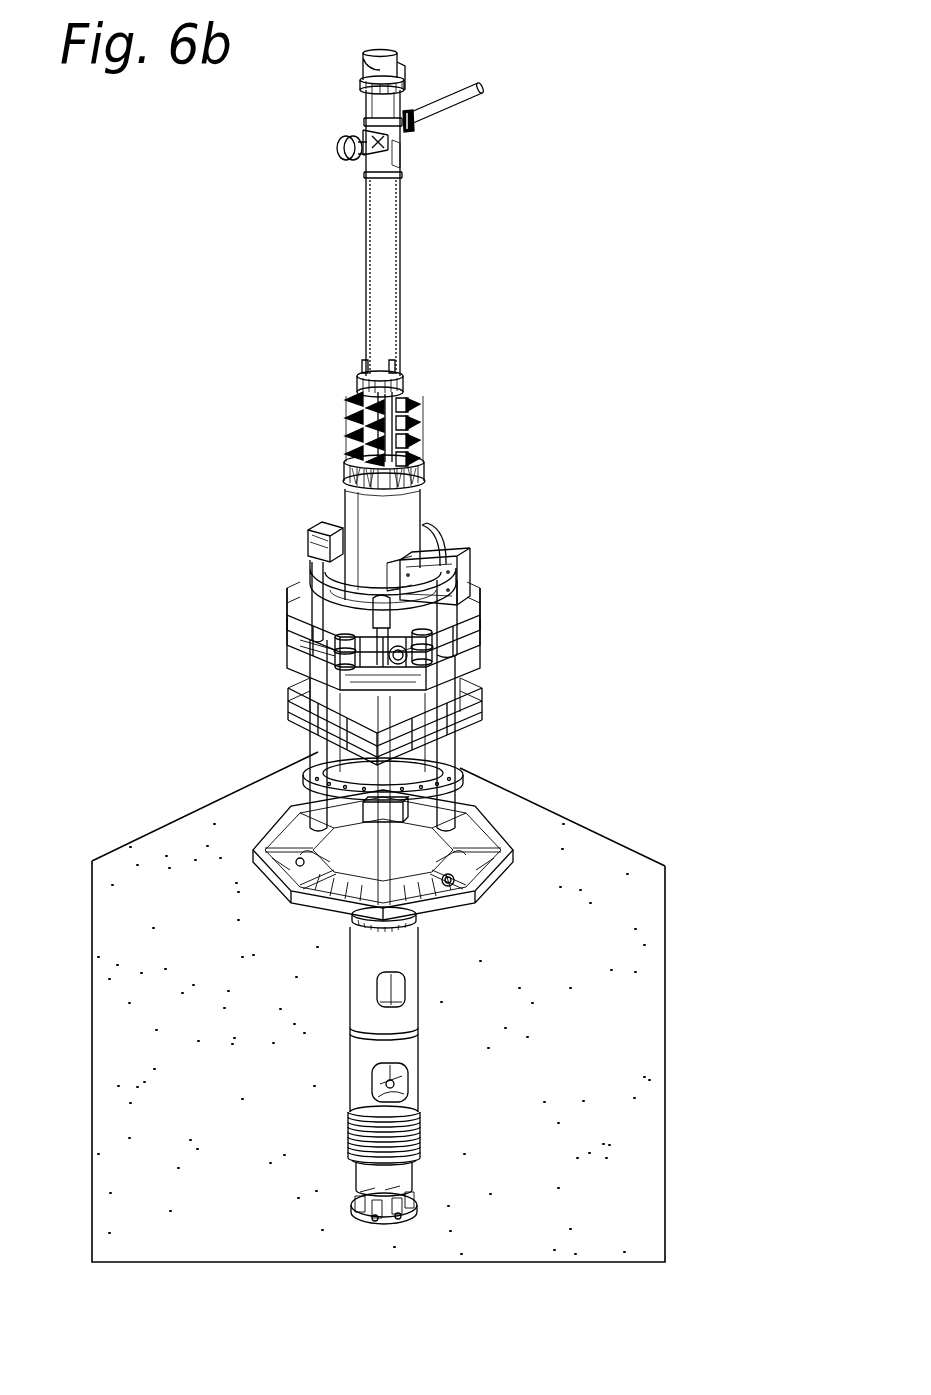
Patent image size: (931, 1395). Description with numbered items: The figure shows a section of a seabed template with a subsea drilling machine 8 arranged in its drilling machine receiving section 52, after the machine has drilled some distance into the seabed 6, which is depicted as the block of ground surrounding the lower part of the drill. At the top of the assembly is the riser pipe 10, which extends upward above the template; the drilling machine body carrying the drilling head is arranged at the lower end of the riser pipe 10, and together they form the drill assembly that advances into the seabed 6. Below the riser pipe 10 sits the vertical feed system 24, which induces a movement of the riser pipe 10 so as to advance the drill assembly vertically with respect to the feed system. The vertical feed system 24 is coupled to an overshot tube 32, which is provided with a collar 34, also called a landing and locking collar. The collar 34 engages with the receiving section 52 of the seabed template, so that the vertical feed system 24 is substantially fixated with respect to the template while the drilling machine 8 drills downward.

The seabed 6 is at (147, 942).
The drilling machine 8 is at (546, 241).
The riser pipe 10 is at (385, 218).
The vertical feed system 24 is at (448, 407).
The overshot tube 32 is at (413, 502).
The collar 34 is at (447, 577).
The drilling machine receiving section 52 is at (252, 626).